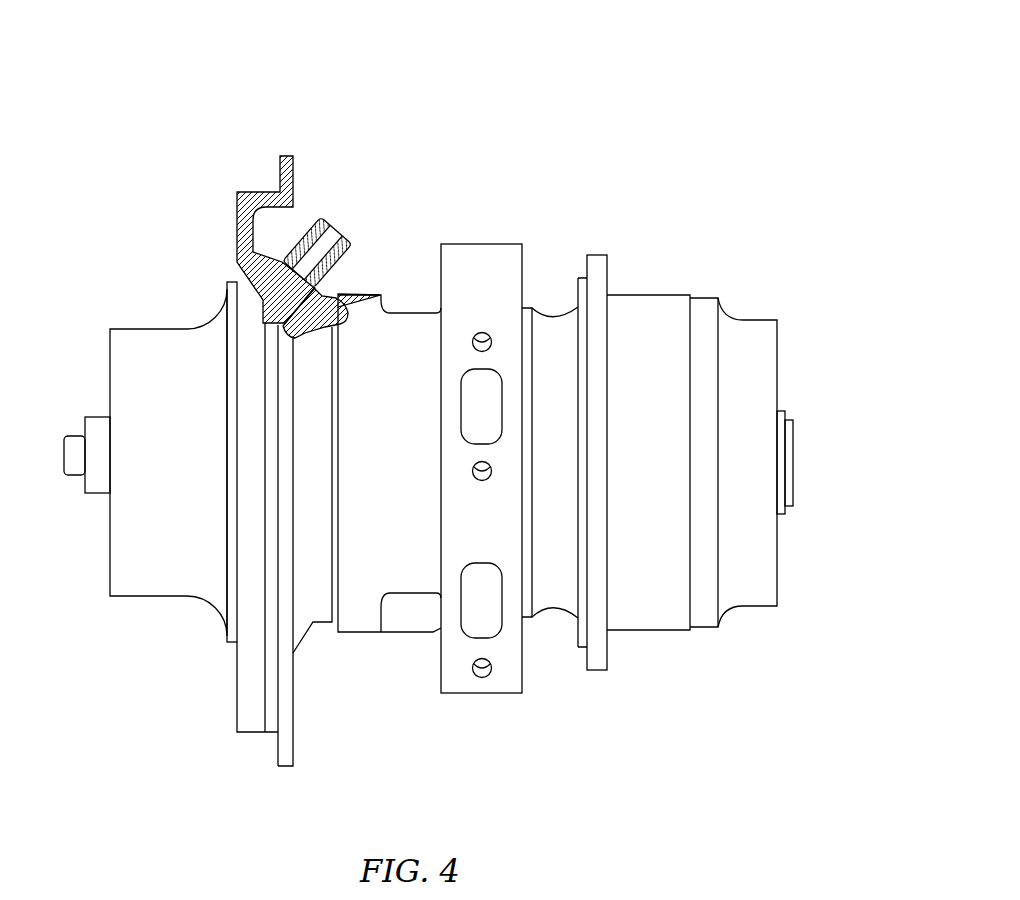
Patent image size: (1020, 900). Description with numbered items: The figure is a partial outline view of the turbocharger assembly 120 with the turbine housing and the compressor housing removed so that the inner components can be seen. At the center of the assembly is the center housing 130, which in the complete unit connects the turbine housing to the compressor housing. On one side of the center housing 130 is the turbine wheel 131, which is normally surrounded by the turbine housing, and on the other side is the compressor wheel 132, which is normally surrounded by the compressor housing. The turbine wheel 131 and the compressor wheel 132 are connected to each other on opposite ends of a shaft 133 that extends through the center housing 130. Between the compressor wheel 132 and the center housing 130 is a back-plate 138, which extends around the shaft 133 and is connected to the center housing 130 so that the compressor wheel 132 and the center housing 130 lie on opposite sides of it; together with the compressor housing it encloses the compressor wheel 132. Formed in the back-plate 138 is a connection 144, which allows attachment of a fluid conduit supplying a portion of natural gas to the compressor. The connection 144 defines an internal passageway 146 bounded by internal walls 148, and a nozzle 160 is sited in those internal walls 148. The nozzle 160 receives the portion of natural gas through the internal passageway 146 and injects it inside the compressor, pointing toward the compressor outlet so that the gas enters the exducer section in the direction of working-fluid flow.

The turbocharger assembly 120 is at (652, 112).
The center housing 130 is at (503, 252).
The turbine wheel 131 is at (650, 300).
The compressor wheel 132 is at (137, 328).
The shaft 133 is at (64, 454).
The back-plate 138 is at (287, 156).
The connection 144 is at (370, 230).
The internal passageway 146 is at (337, 232).
The internal walls 148 is at (300, 235).
The nozzle 160 is at (268, 313).